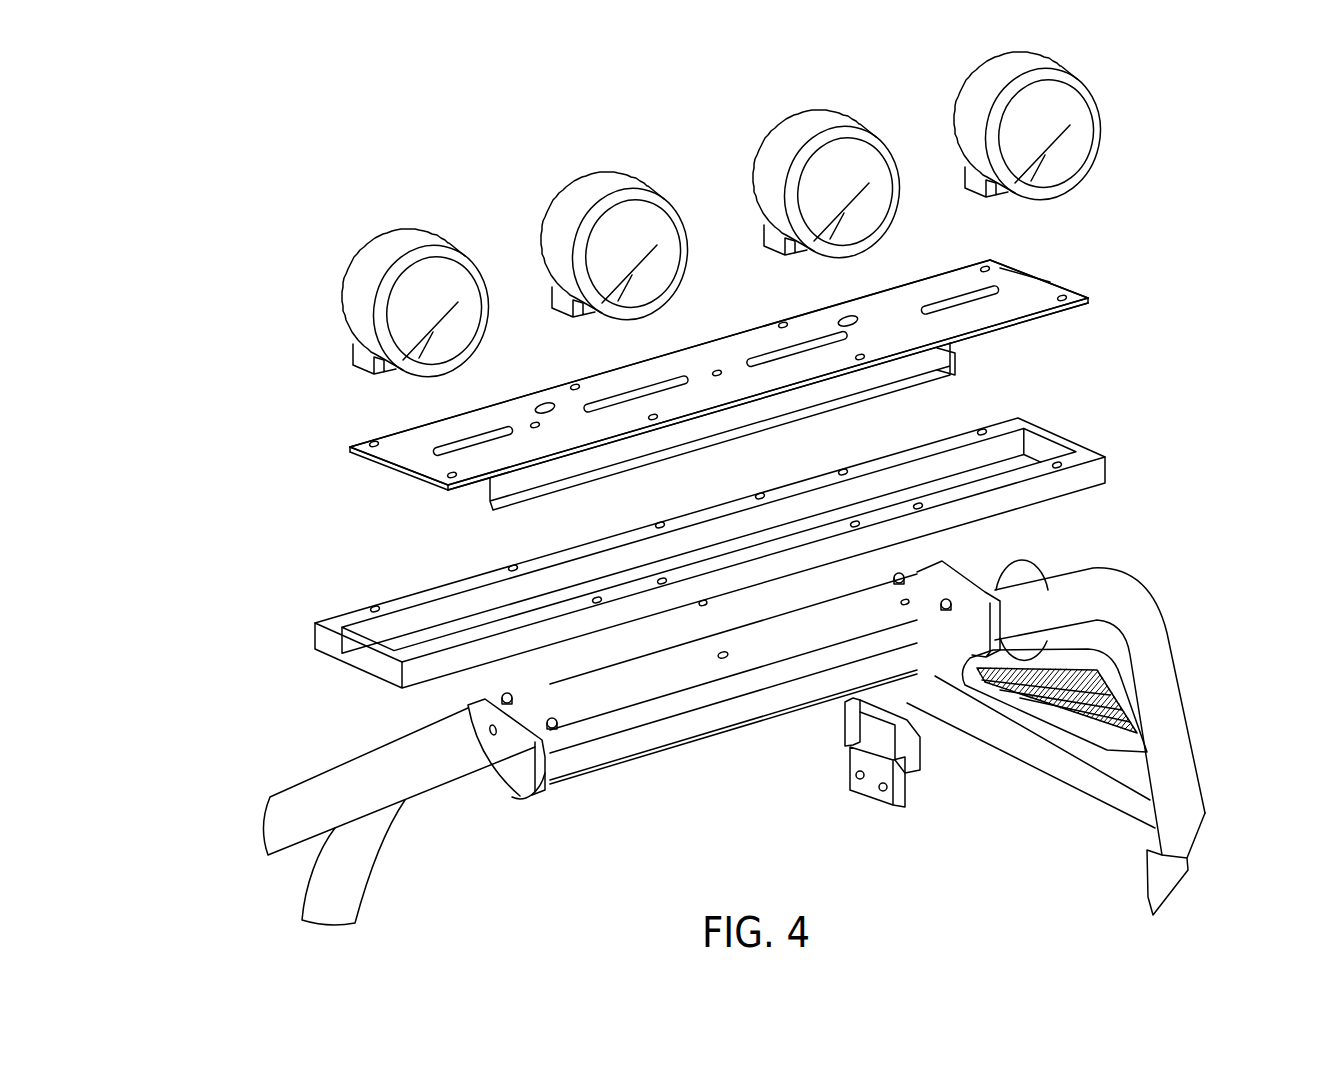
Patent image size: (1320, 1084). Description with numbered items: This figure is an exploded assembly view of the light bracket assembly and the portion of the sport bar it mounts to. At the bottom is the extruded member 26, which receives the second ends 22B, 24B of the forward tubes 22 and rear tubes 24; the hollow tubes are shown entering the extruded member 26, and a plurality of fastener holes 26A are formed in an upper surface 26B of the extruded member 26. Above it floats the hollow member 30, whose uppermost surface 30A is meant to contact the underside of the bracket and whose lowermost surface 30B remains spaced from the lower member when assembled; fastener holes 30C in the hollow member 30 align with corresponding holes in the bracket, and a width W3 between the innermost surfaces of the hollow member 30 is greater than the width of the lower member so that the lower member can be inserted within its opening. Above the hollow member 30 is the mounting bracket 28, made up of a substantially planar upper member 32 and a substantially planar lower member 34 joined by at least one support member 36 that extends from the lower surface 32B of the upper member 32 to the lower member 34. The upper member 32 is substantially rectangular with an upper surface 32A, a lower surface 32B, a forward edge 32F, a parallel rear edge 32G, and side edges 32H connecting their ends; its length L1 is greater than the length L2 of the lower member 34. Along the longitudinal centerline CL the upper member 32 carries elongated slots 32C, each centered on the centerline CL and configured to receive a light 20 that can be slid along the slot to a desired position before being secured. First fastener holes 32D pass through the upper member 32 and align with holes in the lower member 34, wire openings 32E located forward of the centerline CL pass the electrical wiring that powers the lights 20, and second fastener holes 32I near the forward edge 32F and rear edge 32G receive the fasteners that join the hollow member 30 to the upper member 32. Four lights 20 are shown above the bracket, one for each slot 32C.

The light 20 is at (550, 222).
The forward tube 22 is at (297, 778).
The second end of the forward tube 22B is at (437, 720).
The rear tube 24 is at (365, 890).
The second end of the rear tube 24B is at (1045, 568).
The extruded member 26 is at (828, 700).
The fastener hole 26A is at (720, 653).
The upper surface of the extruded member 26B is at (775, 643).
The mounting bracket 28 is at (404, 424).
The hollow member 30 is at (744, 533).
The uppermost surface of the hollow member 30A is at (990, 427).
The lowermost surface of the hollow member 30B is at (1087, 492).
The fastener hole 30C is at (755, 543).
The upper member 32 is at (736, 378).
The upper surface of the upper member 32A is at (1028, 295).
The lower surface of the upper member 32B is at (1070, 308).
The elongated slot 32C is at (610, 407).
The first fastener hole 32D is at (532, 423).
The wire opening 32E is at (548, 403).
The forward edge 32F is at (798, 383).
The rear edge 32G is at (745, 332).
The side edge 32H is at (400, 470).
The second fastener hole 32I is at (453, 479).
The lower member 34 is at (867, 392).
The support member 36 is at (948, 346).
The length of the upper member L1 is at (322, 432).
The length of the lower member L2 is at (985, 374).
The width between innermost surfaces of the hollow member W3 is at (402, 662).
The longitudinal centerline CL is at (1105, 262).